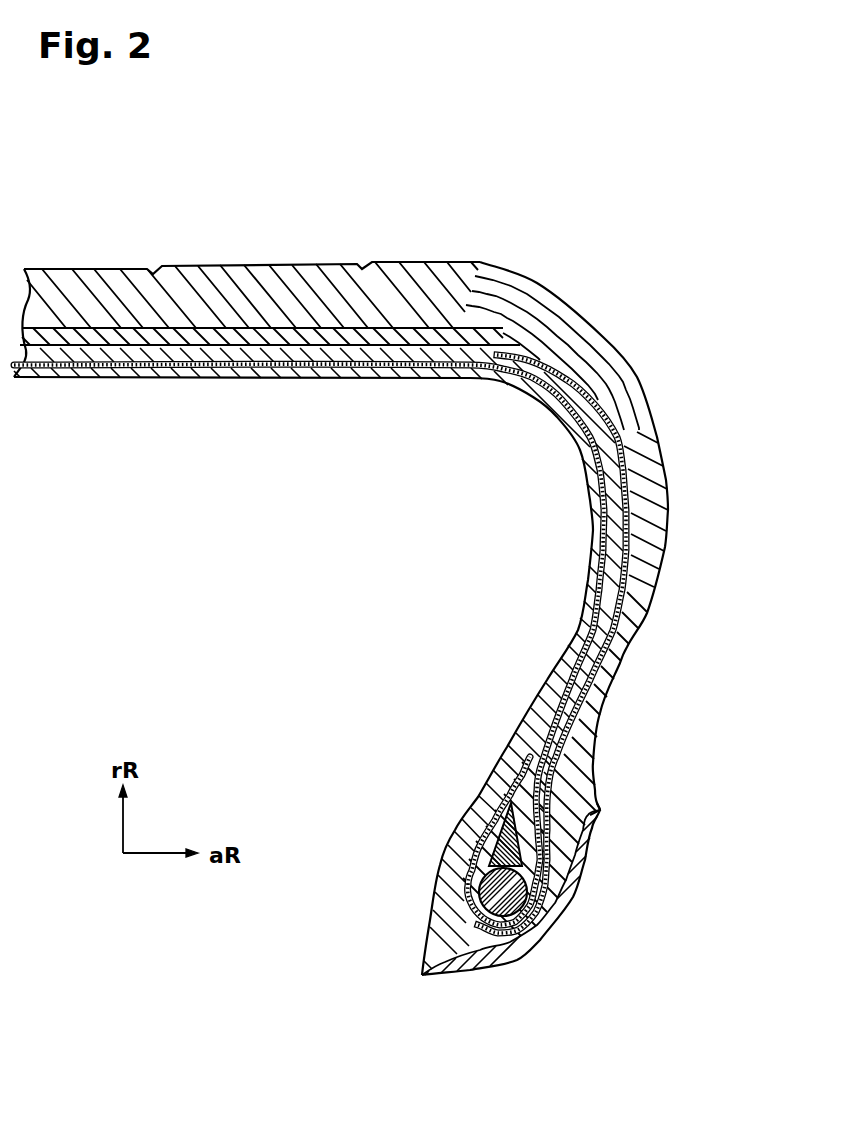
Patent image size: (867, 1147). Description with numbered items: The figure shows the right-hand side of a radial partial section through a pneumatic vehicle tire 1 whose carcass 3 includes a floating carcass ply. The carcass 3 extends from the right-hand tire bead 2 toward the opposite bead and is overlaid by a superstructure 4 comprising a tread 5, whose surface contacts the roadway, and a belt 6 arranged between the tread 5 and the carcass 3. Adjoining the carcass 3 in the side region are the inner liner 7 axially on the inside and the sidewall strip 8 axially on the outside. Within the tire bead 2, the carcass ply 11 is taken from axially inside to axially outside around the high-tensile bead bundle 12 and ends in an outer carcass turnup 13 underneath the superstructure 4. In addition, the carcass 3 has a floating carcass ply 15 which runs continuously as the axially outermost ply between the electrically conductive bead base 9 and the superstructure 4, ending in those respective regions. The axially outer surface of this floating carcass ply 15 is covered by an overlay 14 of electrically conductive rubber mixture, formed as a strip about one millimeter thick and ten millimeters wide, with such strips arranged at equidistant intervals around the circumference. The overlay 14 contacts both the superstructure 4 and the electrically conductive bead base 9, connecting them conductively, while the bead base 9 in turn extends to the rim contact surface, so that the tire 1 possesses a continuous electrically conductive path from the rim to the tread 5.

The pneumatic vehicle tire 1 is at (257, 220).
The tire bead 2 is at (420, 893).
The carcass 3 is at (468, 375).
The superstructure 4 is at (601, 259).
The tread 5 is at (313, 266).
The belt 6 is at (438, 323).
The inner liner 7 is at (598, 546).
The sidewall strip 8 is at (653, 578).
The electrically conductive bead base 9 is at (557, 937).
The carcass ply 11 is at (603, 460).
The bead bundle 12 is at (463, 862).
The carcass turnup 13 is at (556, 782).
The overlay 14 is at (613, 627).
The floating carcass ply 15 is at (577, 720).